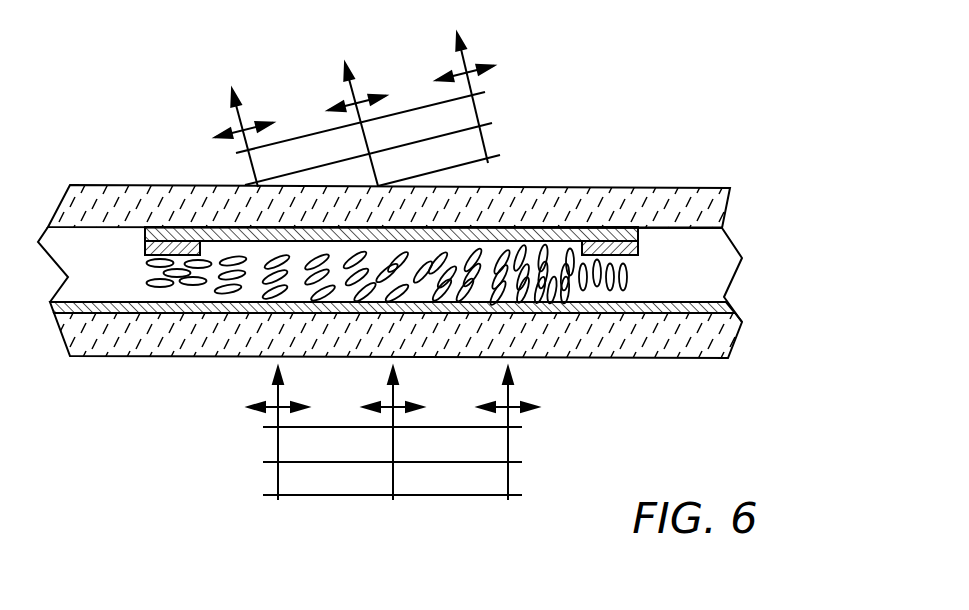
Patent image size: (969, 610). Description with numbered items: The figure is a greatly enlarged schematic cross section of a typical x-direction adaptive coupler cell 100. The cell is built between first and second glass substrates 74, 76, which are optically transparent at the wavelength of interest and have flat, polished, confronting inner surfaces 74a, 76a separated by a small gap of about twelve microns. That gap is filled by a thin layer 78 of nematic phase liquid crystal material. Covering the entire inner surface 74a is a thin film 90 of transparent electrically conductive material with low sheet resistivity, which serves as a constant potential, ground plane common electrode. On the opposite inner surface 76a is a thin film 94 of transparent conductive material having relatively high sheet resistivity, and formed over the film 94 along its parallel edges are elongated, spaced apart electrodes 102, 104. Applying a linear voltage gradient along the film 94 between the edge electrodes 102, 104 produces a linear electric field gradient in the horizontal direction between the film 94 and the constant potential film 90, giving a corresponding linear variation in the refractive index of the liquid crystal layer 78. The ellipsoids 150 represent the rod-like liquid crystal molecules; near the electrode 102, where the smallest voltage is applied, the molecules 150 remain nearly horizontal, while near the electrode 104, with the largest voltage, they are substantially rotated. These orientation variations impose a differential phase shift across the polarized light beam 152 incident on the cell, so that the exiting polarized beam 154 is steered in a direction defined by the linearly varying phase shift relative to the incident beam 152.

The x-direction adaptive coupler cell 100 is at (674, 78).
The first glass substrate 74 is at (740, 324).
The inner surface of first substrate 74a is at (702, 303).
The second glass substrate 76 is at (724, 203).
The inner surface of second substrate 76a is at (700, 234).
The liquid crystal layer 78 is at (562, 247).
The constant potential electrode film 90 is at (742, 303).
The high resistivity film 94 is at (640, 238).
The edge electrode 102 is at (145, 248).
The edge electrode 104 is at (640, 249).
The liquid crystal molecules 150 is at (230, 293).
The incident polarized light beam 152 is at (495, 445).
The exiting polarized beam 154 is at (452, 117).